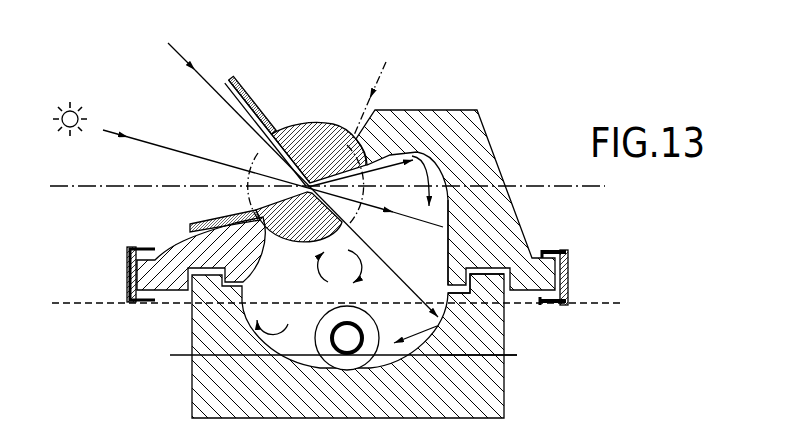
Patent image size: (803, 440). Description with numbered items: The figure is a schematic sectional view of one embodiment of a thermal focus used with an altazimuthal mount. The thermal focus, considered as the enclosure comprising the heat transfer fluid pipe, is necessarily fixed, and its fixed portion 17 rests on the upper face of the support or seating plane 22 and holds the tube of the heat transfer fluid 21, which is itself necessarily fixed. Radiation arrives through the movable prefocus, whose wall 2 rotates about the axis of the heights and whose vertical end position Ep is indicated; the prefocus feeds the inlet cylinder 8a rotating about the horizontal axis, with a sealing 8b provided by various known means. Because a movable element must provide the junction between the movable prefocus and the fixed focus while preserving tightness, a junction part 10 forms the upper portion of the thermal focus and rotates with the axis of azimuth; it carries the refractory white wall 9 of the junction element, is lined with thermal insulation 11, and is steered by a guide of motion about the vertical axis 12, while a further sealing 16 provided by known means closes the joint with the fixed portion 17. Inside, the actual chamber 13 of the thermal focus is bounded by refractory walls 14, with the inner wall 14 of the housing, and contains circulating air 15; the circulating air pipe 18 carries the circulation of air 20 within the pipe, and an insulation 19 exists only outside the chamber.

The wall of the prefocus 2 is at (252, 102).
The inlet cylinder 8a is at (298, 126).
The sealing 8b is at (362, 128).
The refractory wall of the junction element 9 is at (428, 174).
The junction part 10 is at (517, 211).
The thermal insulation 11 is at (518, 233).
The guide of motion about the vertical axis 12 is at (568, 284).
The chamber of the thermal focus 13 is at (398, 244).
The refractory walls 14 is at (449, 259).
The circulating air 15 is at (309, 290).
The sealing 16 is at (508, 308).
The fixed portion of the thermal focus 17 is at (494, 387).
The circulating air pipe 18 is at (412, 327).
The insulation 19 is at (488, 353).
The circulation of air in pipe 20 is at (331, 353).
The tube of the heat transfer fluid 21 is at (343, 337).
The upper face of the support or seating plane 22 is at (345, 317).
The vertical end position of the prefocus Ep is at (369, 92).